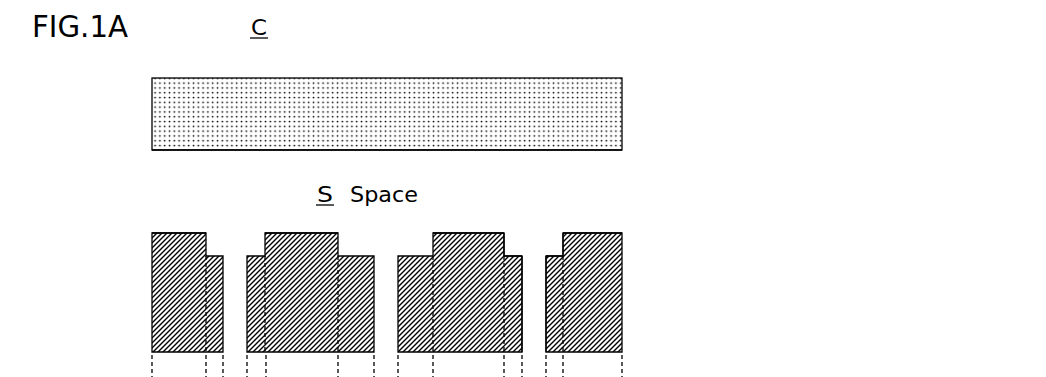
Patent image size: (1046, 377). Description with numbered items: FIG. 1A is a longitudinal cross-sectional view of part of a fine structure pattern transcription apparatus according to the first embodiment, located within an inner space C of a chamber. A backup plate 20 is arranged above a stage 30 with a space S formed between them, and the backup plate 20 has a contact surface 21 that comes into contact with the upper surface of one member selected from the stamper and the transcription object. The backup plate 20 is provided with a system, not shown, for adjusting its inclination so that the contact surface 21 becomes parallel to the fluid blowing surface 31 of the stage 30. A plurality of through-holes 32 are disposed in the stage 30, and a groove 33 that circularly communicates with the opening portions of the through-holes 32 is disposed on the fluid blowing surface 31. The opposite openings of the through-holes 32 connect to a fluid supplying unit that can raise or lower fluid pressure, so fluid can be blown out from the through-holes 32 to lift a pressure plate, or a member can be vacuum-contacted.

The backup plate 20 is at (622, 112).
The contact surface 21 is at (593, 150).
The stage 30 is at (622, 307).
The fluid blowing surface 31 is at (477, 233).
The through-holes 32 is at (530, 256).
The groove 33 is at (513, 256).